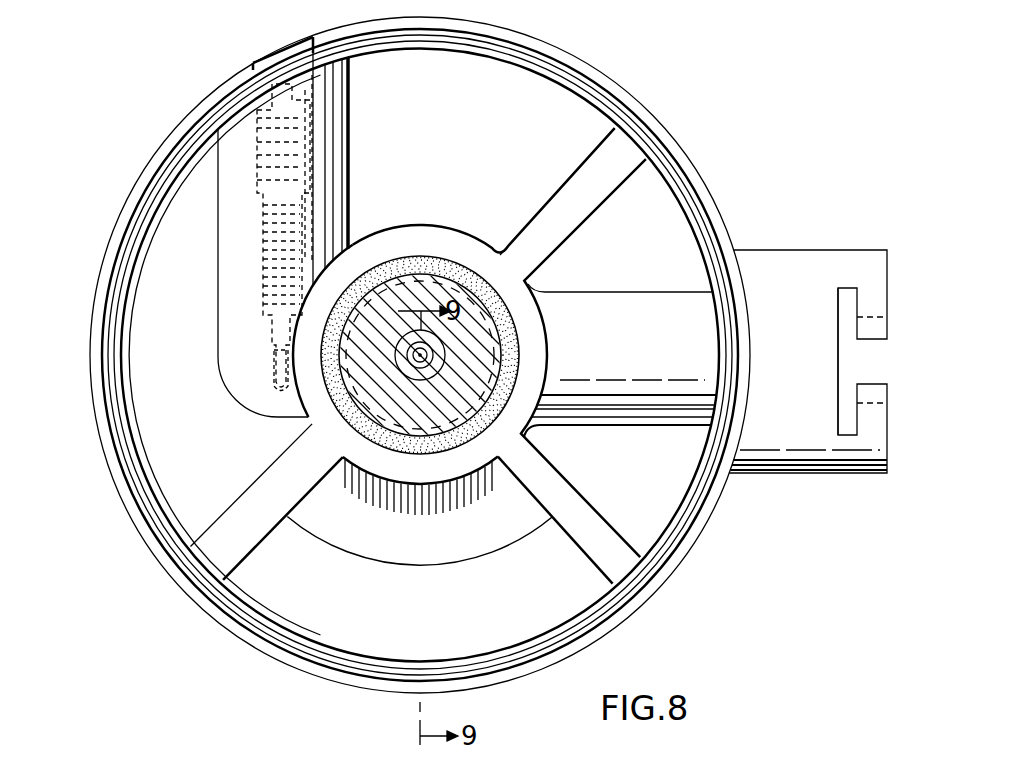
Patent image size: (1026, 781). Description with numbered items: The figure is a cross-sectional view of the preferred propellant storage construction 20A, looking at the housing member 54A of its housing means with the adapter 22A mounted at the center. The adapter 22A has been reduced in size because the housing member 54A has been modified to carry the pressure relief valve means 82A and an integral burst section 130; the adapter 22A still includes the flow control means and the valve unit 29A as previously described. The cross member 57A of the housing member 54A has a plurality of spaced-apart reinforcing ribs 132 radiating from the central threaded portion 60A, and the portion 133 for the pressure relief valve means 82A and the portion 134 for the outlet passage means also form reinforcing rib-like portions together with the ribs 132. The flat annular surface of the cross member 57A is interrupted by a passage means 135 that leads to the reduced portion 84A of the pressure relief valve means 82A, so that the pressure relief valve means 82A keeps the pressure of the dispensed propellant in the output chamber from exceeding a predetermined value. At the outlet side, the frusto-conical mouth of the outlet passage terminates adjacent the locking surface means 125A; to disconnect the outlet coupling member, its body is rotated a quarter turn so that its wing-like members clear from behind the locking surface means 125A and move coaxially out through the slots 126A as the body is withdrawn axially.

The propellant storage construction 20A is at (754, 142).
The housing member 54A is at (128, 510).
The cross member 57A is at (130, 374).
The central threaded portion 60A is at (433, 233).
The adapter 22A is at (380, 397).
The valve unit 29A is at (450, 354).
The reinforcing ribs 132 is at (572, 192).
The portion for the outlet passage means 134 is at (652, 292).
The integral burst section 130 is at (445, 548).
The portion for the pressure relief valve means 133 is at (348, 150).
The pressure relief valve means 82A is at (322, 177).
The passage means 135 is at (272, 378).
The reduced portion 84A is at (283, 387).
The locking surface means 125A is at (853, 425).
The slots 126A is at (857, 384).